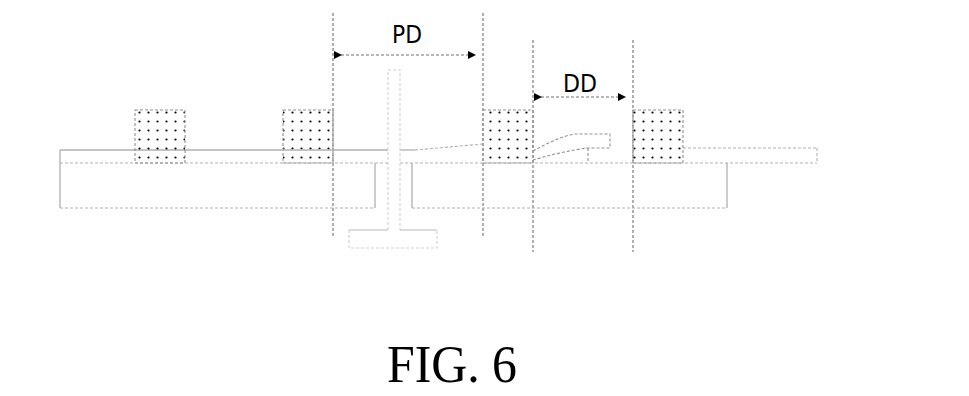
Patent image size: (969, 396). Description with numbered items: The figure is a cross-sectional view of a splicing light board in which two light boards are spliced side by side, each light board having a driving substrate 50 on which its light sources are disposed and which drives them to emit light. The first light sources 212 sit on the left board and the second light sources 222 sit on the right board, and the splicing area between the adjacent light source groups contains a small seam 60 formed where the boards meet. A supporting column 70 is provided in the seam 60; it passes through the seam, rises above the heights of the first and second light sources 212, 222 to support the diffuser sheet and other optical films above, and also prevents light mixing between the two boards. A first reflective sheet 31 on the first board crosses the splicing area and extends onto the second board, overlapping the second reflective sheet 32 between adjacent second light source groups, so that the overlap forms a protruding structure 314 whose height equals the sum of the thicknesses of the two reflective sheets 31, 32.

The first reflective sheet 31 is at (78, 150).
The second reflective sheet 32 is at (755, 155).
The driving substrate 50 is at (210, 182).
The seam 60 is at (406, 198).
The supporting column 70 is at (380, 242).
The first light source 212 is at (152, 145).
The second light source 222 is at (653, 135).
The protruding structure 314 is at (568, 143).